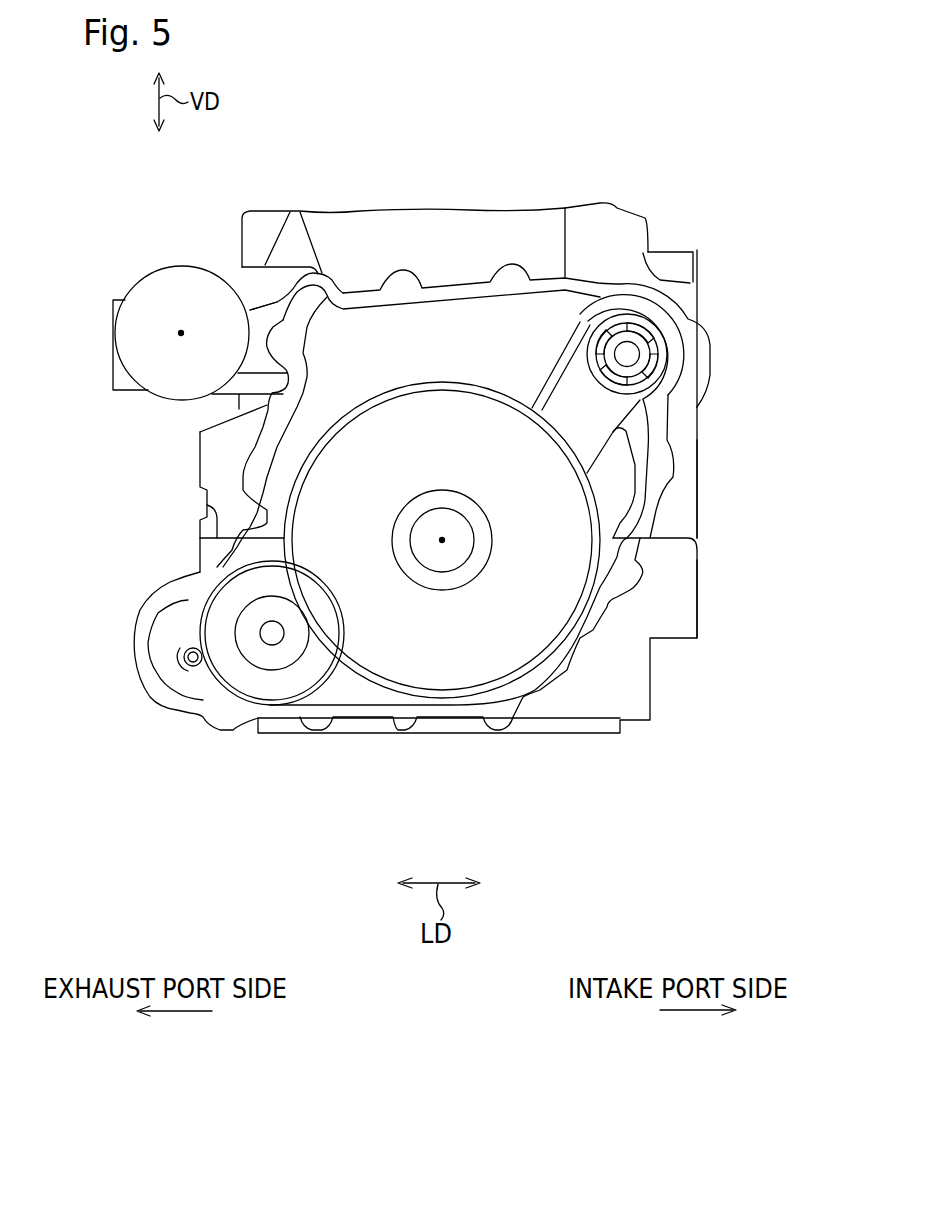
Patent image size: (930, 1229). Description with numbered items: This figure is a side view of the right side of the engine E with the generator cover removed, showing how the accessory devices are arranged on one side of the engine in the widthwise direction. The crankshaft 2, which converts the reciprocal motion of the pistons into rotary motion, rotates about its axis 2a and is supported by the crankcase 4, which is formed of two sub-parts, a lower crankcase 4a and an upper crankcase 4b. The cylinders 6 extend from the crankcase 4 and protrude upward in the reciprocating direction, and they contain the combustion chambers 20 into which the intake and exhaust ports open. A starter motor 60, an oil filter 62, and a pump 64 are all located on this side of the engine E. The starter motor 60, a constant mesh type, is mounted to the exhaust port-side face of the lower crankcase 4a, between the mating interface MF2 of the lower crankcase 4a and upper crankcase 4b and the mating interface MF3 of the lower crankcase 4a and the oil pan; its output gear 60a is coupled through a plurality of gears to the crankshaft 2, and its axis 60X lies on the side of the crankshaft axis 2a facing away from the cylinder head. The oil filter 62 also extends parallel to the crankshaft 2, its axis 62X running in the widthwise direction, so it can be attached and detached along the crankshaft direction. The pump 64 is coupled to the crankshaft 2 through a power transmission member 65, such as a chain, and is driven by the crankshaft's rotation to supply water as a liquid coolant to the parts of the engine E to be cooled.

The crankshaft 2 is at (444, 560).
The axis of rotation of the crankshaft 2a is at (444, 541).
The crankcase 4 is at (752, 518).
The lower crankcase 4a is at (672, 590).
The upper crankcase 4b is at (676, 522).
The cylinders 6 is at (620, 222).
The combustion chambers 20 is at (465, 232).
The starter motor 60 is at (148, 690).
The axis of rotation of the starter motor 60X is at (190, 658).
The output gear 60a is at (194, 670).
The oil filter 62 is at (181, 282).
The axis of the oil filter 62X is at (180, 336).
The pump 64 is at (640, 350).
The power transmission member 65 is at (660, 422).
The engine E is at (683, 220).
The mating interface of the lower crankcase and the upper crankcase MF2 is at (210, 513).
The mating interface of the lower crankcase and the oil pan MF3 is at (340, 736).